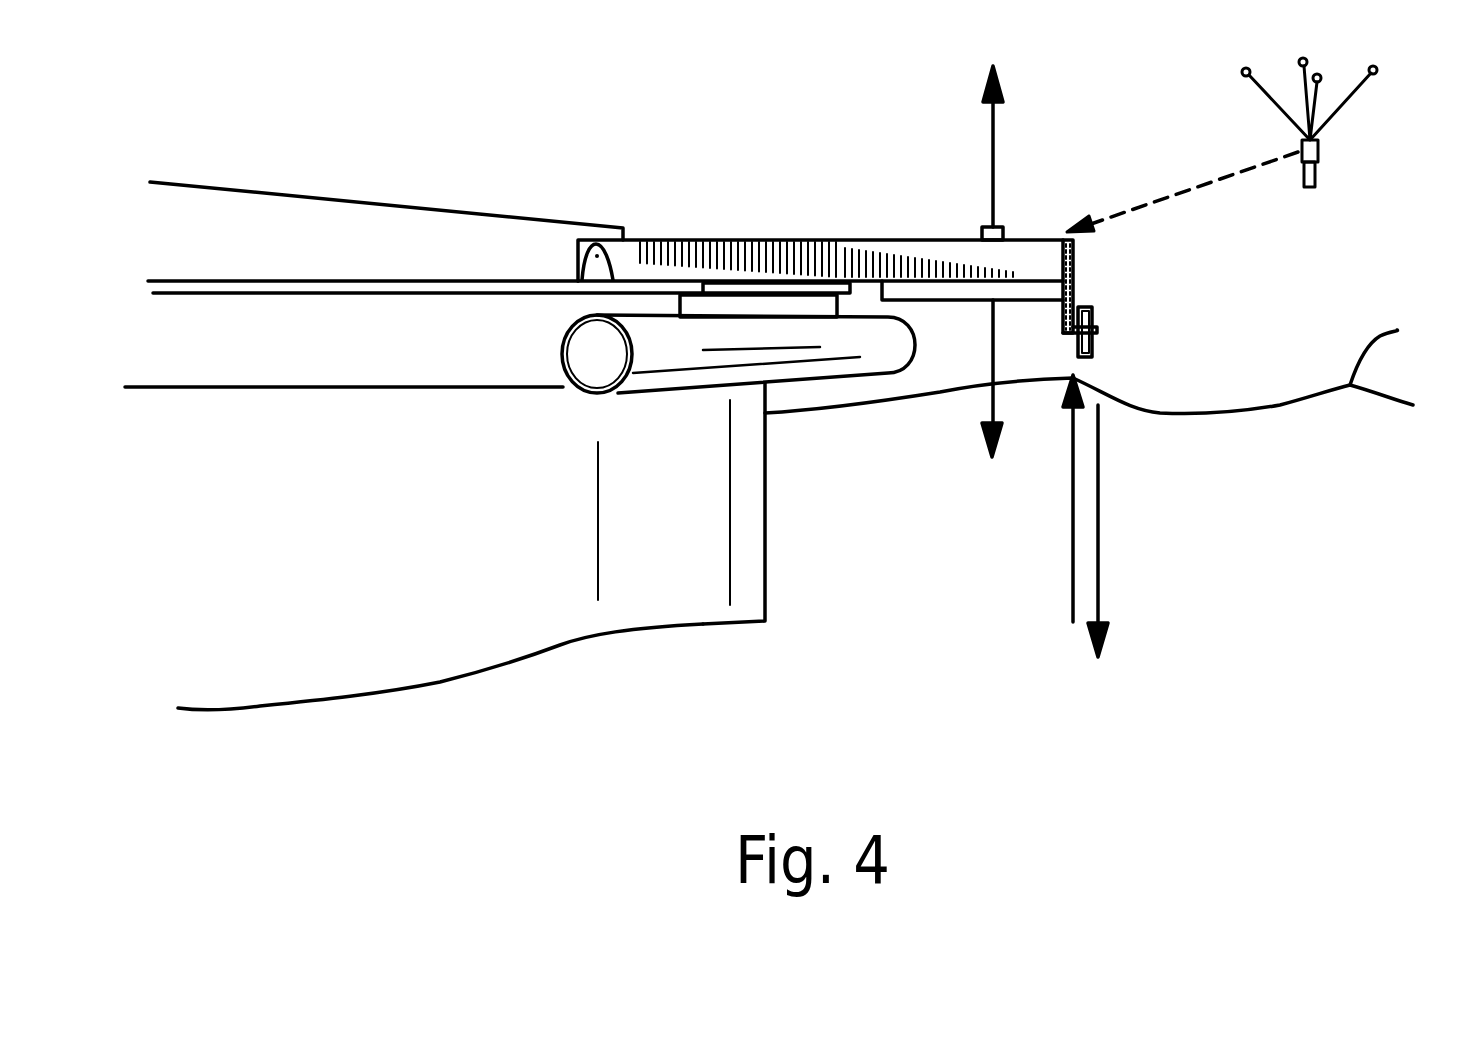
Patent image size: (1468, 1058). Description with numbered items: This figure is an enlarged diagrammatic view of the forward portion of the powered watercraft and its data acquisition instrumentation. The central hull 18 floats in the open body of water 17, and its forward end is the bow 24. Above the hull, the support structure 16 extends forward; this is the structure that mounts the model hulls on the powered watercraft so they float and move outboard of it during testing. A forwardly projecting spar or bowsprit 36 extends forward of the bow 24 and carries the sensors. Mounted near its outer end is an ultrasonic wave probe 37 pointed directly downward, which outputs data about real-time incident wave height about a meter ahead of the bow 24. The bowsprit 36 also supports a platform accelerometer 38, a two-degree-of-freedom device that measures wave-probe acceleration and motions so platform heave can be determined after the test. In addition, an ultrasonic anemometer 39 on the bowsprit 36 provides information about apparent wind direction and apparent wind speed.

The support structure 16 is at (347, 198).
The open body of water 17 is at (1380, 336).
The central hull 18 is at (700, 618).
The bow 24 is at (765, 495).
The bowsprit 36 is at (750, 240).
The ultrasonic wave probe 37 is at (1097, 314).
The platform accelerometer 38 is at (982, 227).
The ultrasonic anemometer 39 is at (1320, 147).